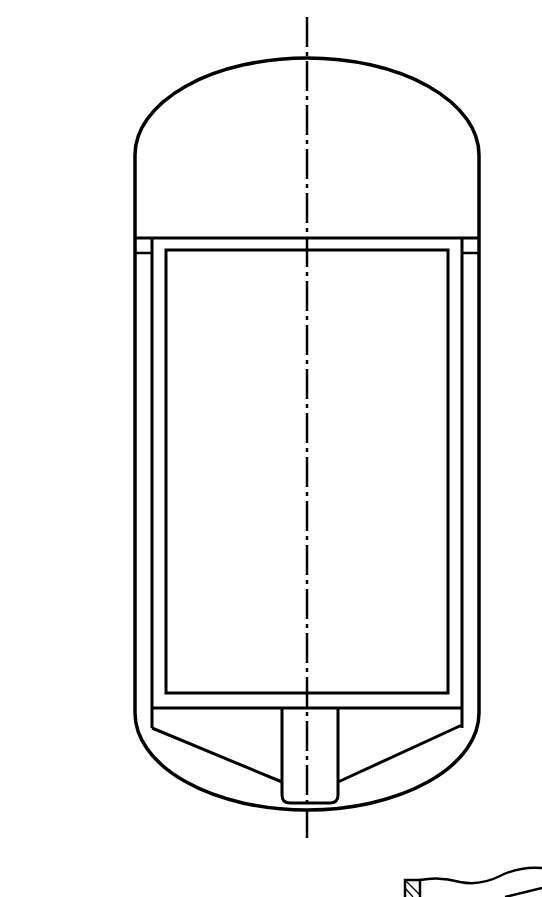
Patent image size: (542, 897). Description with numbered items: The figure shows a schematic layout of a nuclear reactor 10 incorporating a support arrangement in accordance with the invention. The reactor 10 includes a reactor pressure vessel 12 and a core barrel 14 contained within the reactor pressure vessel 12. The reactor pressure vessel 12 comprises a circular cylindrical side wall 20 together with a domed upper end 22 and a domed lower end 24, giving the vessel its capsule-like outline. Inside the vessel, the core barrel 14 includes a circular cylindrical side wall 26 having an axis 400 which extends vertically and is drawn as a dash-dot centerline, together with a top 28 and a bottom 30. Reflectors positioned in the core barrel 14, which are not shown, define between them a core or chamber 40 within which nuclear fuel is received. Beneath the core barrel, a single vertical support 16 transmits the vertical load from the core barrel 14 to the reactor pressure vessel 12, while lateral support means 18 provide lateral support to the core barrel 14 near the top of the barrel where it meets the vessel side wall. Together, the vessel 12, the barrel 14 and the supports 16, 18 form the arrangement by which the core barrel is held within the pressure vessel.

The nuclear reactor 10 is at (126, 65).
The reactor pressure vessel 12 is at (118, 177).
The core barrel 14 is at (358, 222).
The single vertical support 16 is at (408, 771).
The lateral support means 18 is at (126, 243).
The circular cylindrical side wall 20 is at (135, 528).
The domed upper end 22 is at (363, 63).
The domed lower end 24 is at (203, 788).
The circular cylindrical side wall 26 is at (150, 448).
The top 28 is at (213, 237).
The bottom 30 is at (180, 712).
The core or chamber 40 is at (257, 296).
The axis 400 is at (308, 488).